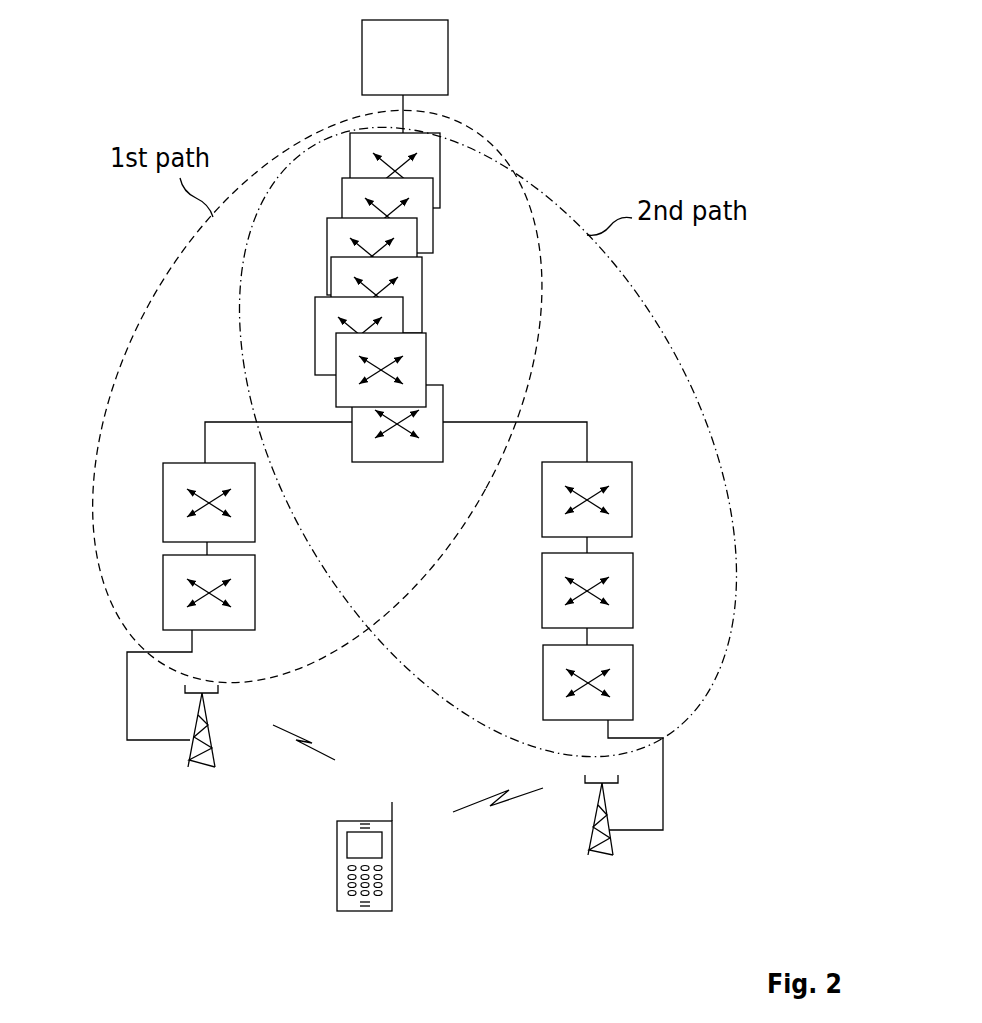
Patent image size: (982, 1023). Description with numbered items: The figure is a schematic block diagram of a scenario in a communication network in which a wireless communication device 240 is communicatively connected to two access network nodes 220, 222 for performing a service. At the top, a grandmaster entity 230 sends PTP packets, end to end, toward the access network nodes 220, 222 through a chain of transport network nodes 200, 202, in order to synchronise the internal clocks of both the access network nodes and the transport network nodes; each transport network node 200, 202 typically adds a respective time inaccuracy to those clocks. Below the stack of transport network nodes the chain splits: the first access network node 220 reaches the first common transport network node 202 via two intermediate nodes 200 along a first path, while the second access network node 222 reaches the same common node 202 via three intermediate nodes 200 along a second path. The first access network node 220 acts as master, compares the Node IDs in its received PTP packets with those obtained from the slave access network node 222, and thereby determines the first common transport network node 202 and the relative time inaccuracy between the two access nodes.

The transport network node 200 is at (440, 170).
The first common transport network node 202 is at (405, 463).
The first access network node 220 is at (215, 750).
The second access network node 222 is at (613, 845).
The grandmaster entity 230 is at (363, 62).
The wireless communication device 240 is at (392, 880).